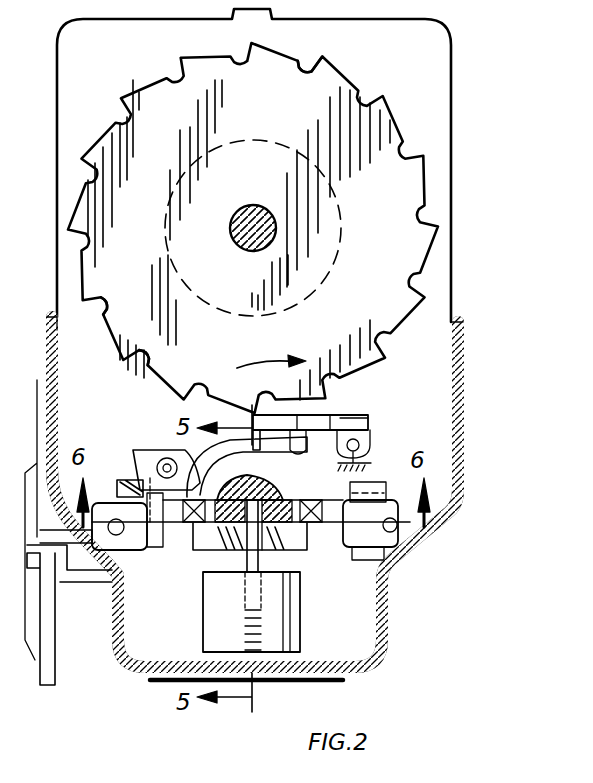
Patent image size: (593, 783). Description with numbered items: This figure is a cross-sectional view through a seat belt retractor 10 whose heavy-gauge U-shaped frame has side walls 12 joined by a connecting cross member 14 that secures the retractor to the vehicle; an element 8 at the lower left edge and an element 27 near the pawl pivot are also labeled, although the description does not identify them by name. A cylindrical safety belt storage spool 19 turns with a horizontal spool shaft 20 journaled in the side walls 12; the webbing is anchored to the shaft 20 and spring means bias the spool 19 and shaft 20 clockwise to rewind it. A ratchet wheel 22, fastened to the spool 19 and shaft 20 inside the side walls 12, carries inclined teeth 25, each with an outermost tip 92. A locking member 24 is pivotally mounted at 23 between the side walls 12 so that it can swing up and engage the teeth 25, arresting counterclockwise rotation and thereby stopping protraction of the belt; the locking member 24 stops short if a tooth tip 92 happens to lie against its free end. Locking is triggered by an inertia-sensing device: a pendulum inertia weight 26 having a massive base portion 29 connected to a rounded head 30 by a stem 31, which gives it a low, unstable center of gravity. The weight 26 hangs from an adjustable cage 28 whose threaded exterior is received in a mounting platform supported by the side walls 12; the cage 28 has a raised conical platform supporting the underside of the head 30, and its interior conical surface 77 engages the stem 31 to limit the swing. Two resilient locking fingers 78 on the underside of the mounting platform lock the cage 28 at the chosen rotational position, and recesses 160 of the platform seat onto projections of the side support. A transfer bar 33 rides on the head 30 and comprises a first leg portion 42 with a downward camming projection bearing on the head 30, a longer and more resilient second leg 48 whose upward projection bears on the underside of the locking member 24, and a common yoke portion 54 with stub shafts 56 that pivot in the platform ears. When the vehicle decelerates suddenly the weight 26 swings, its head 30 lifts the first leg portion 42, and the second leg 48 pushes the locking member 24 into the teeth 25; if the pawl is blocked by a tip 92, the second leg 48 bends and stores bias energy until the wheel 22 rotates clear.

The mounting plate 8 is at (30, 645).
The seat belt retractor 10 is at (41, 93).
The side walls 12 is at (446, 50).
The connecting cross member 14 is at (45, 673).
The safety belt storage spool 19 is at (254, 137).
The spool shaft 20 is at (245, 214).
The ratchet wheels 22 is at (291, 62).
The pivot mounting of locking member 23 is at (374, 418).
The locking member 24 is at (316, 422).
The inclined teeth 25 is at (144, 373).
The inertia weight 26 is at (202, 640).
The bracket 27 is at (378, 482).
The adjustable cage 28 is at (208, 535).
The base portion 29 is at (292, 627).
The head 30 is at (217, 497).
The stem 31 is at (268, 555).
The transfer bar 33 is at (130, 455).
The first leg portion 42 is at (260, 376).
The second leg 48 is at (286, 442).
The yoke portion 54 is at (182, 447).
The stub shafts 56 is at (163, 460).
The interior conical surface 77 is at (217, 552).
The resilient locking fingers 78 is at (187, 540).
The tip of ratchet tooth 92 is at (57, 300).
The recesses 160 is at (118, 534).